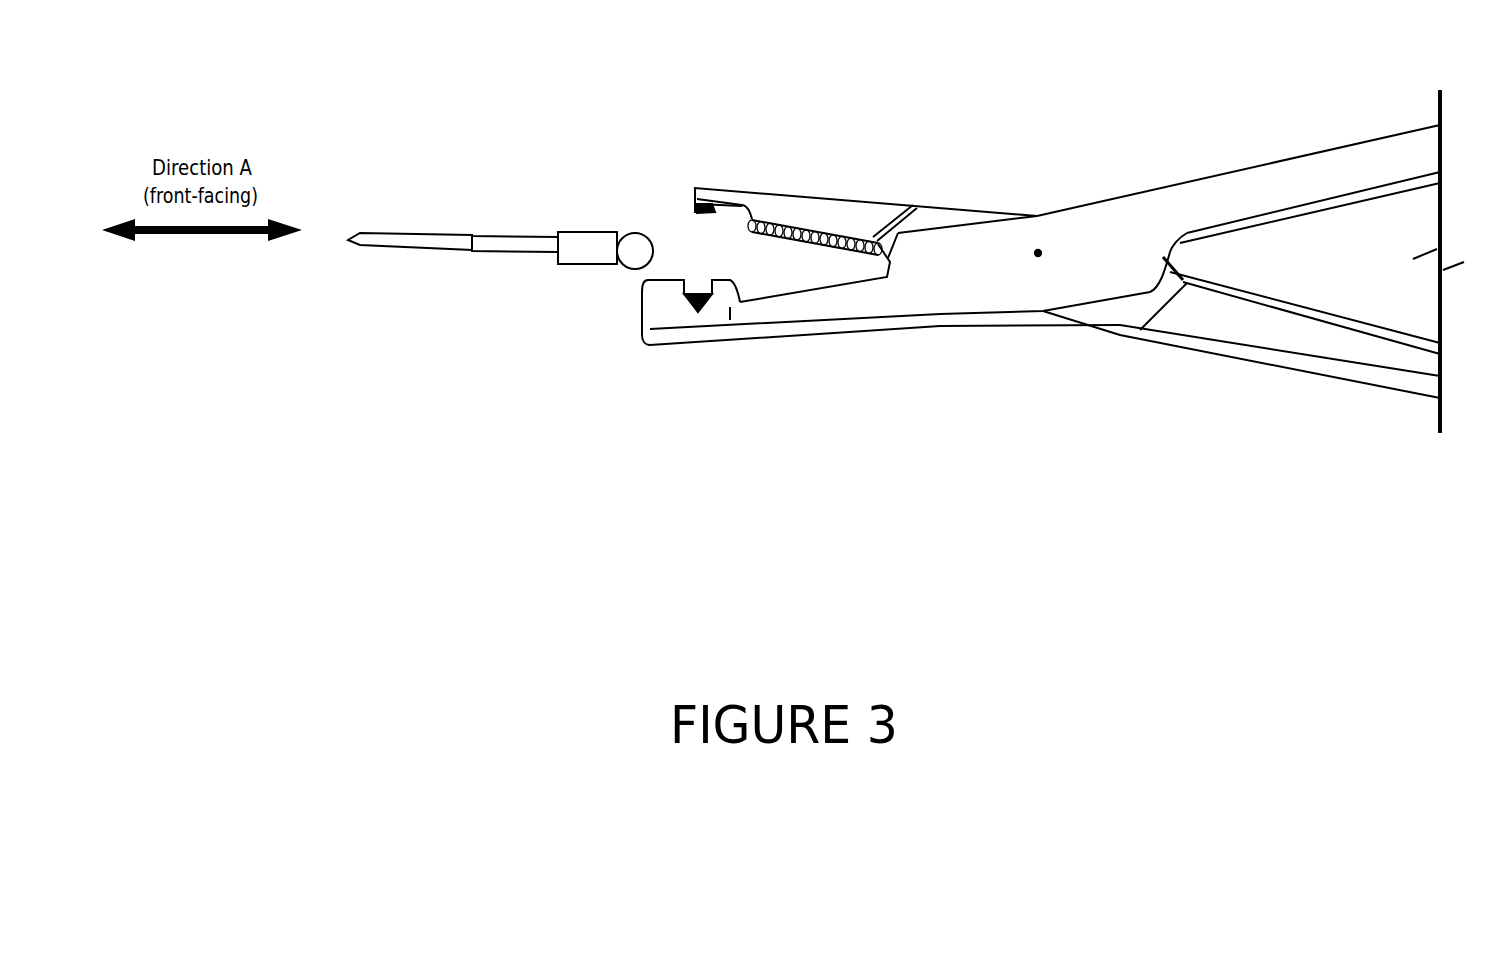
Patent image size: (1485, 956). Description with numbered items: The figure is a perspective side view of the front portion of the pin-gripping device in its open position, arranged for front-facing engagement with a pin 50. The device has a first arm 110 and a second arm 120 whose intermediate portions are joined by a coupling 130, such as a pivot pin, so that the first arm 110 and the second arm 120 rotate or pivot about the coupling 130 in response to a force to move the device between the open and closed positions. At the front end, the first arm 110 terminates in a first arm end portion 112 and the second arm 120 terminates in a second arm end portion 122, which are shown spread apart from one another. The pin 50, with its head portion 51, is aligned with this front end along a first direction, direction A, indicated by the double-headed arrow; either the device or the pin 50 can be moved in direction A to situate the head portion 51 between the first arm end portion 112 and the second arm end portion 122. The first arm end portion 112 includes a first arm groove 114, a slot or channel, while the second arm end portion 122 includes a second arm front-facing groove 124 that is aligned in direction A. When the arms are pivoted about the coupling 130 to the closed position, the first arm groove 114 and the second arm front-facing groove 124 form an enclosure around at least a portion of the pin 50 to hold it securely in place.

The pin 50 is at (487, 270).
The head portion 51 is at (620, 280).
The first arm 110 is at (1223, 350).
The first arm end portion 112 is at (797, 176).
The first arm groove 114 is at (708, 218).
The second arm 120 is at (1138, 170).
The second arm end portion 122 is at (856, 344).
The second arm front-facing groove 124 is at (700, 314).
The coupling 130 is at (1038, 220).